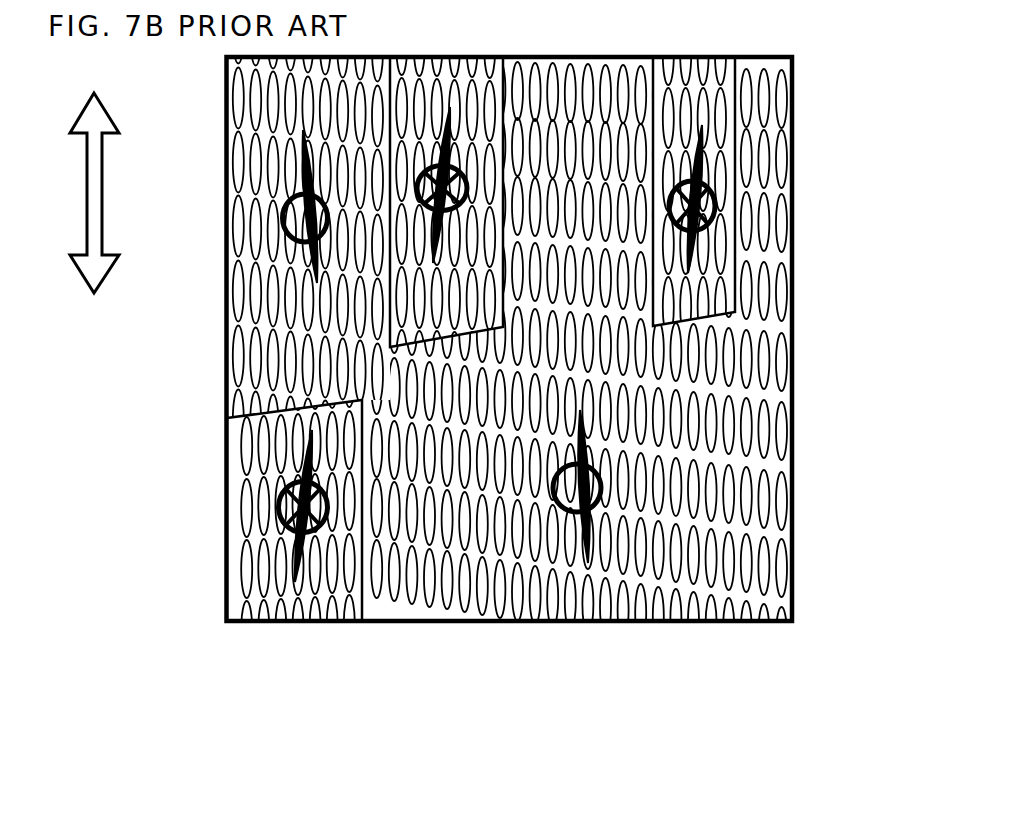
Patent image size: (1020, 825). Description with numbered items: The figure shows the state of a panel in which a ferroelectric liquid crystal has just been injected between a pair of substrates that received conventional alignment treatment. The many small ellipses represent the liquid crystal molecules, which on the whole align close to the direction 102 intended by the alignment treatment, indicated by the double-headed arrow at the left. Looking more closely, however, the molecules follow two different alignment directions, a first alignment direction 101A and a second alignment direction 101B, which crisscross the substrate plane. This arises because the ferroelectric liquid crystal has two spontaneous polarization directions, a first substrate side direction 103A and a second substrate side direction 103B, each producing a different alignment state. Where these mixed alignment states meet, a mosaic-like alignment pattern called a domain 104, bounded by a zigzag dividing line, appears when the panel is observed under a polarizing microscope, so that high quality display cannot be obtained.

The first alignment direction 101A is at (706, 150).
The second alignment direction 101B is at (582, 432).
The direction intended by the alignment treatment 102 is at (85, 287).
The first substrate side direction 103A is at (297, 240).
The second substrate side direction 103B is at (290, 525).
The domain 104 is at (715, 318).